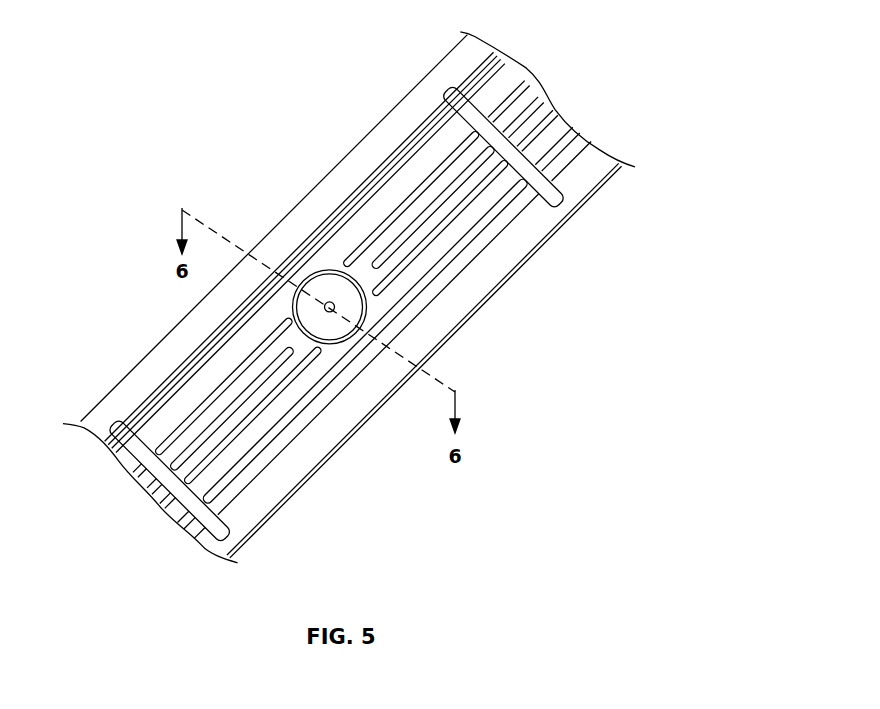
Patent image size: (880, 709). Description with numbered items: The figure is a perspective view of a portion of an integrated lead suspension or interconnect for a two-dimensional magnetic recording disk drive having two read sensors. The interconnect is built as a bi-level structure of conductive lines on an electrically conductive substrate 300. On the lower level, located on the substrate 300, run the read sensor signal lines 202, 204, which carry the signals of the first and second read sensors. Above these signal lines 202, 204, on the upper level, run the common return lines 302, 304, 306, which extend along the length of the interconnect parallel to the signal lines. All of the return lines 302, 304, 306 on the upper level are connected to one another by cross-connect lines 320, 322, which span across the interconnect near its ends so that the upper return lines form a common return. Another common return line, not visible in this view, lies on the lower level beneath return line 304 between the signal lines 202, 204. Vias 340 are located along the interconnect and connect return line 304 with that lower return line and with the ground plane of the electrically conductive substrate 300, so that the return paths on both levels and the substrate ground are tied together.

The electrically conductive substrate 300 is at (475, 310).
The common return line 302 is at (215, 347).
The common return line 304 is at (262, 373).
The common return line 306 is at (267, 440).
The read sensor signal line 202 is at (197, 400).
The read sensor signal line 204 is at (222, 461).
The cross-connect line 320 is at (125, 456).
The cross-connect line 322 is at (560, 168).
The via 340 is at (307, 266).